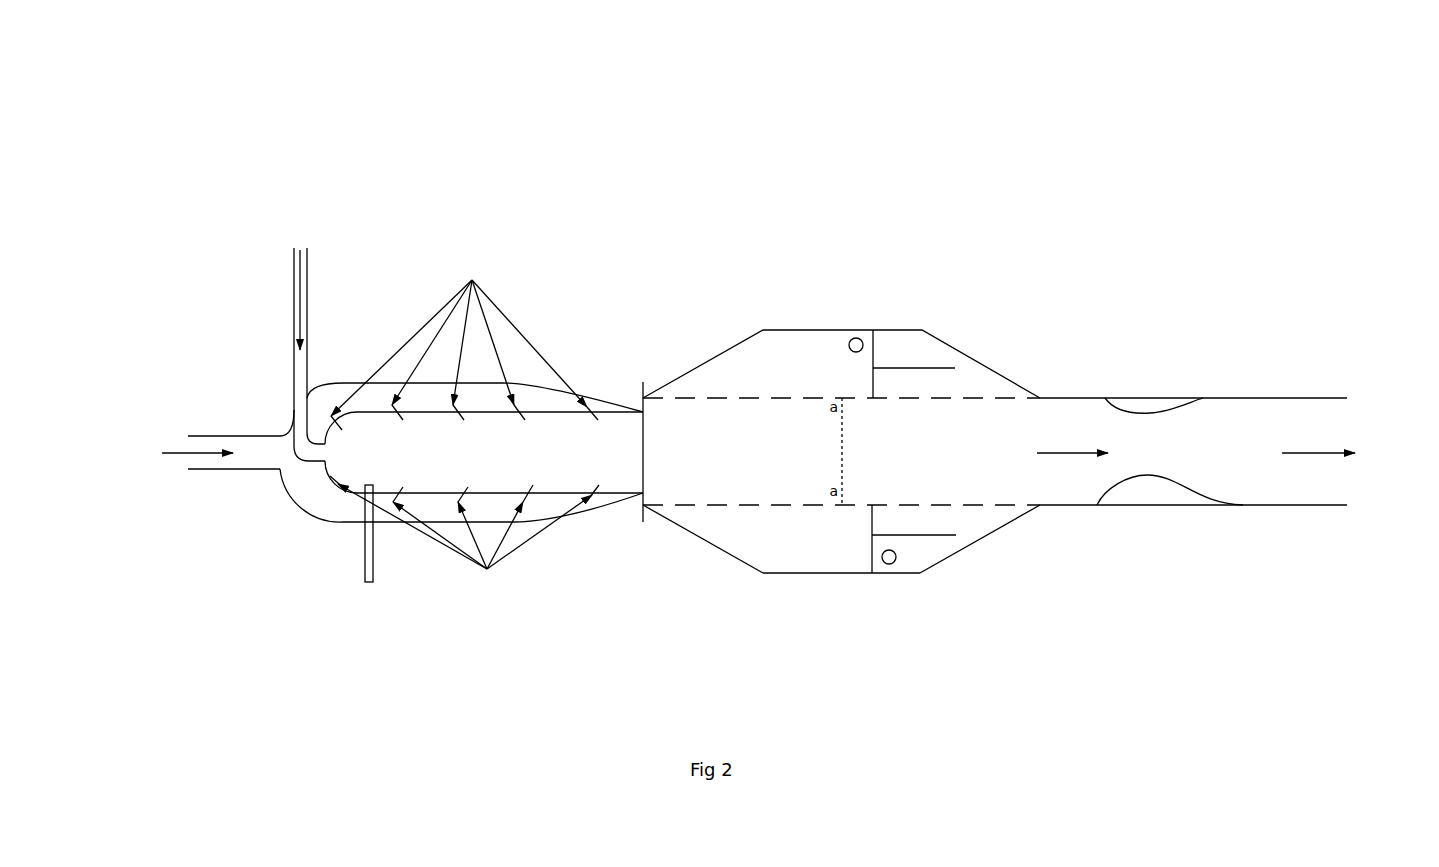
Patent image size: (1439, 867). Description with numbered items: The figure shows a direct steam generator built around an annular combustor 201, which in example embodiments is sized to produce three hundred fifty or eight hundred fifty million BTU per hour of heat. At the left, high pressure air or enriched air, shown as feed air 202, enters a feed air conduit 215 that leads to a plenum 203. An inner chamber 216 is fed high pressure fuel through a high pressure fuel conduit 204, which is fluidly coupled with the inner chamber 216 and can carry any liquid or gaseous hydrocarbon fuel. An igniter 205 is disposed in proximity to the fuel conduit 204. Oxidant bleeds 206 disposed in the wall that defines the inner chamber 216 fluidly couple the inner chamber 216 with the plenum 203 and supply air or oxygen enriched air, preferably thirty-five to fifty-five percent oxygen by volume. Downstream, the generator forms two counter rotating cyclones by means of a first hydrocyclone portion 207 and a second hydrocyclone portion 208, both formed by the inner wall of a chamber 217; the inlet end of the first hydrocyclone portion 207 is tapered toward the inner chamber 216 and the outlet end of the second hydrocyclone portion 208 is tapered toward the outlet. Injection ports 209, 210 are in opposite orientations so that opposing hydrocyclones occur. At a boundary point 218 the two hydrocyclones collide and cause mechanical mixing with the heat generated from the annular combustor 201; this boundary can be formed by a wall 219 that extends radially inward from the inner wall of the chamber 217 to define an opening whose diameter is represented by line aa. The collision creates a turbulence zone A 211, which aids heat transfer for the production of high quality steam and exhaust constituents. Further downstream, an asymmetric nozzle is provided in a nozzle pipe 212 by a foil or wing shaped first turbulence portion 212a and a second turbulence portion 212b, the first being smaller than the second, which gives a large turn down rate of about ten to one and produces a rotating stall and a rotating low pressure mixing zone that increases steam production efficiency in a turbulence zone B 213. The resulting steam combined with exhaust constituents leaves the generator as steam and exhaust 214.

The annular combustor 201 is at (385, 523).
The feed air 202 is at (183, 452).
The plenum 203 is at (315, 496).
The high pressure fuel conduit 204 is at (303, 333).
The igniter 205 is at (365, 556).
The oxidant bleeds 206 is at (487, 569).
The first hydrocyclone portion 207 is at (800, 330).
The second hydrocyclone portion 208 is at (920, 573).
The injection port 209 is at (862, 333).
The injection port 210 is at (885, 565).
The turbulence zone A 211 is at (985, 435).
The nozzle pipe 212 is at (1085, 398).
The first turbulence portion 212a is at (1140, 410).
The second turbulence portion 212b is at (1120, 483).
The turbulence zone B 213 is at (1233, 433).
The steam and exhaust 214 is at (1394, 464).
The feed air conduit 215 is at (243, 469).
The inner chamber 216 is at (622, 493).
The chamber 217 is at (780, 573).
The boundary point 218 is at (872, 398).
The wall 219 is at (955, 368).